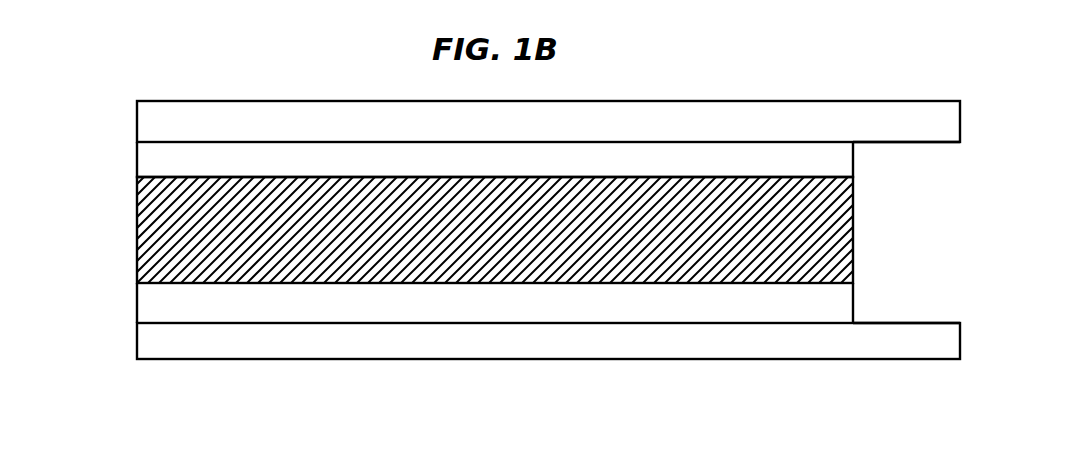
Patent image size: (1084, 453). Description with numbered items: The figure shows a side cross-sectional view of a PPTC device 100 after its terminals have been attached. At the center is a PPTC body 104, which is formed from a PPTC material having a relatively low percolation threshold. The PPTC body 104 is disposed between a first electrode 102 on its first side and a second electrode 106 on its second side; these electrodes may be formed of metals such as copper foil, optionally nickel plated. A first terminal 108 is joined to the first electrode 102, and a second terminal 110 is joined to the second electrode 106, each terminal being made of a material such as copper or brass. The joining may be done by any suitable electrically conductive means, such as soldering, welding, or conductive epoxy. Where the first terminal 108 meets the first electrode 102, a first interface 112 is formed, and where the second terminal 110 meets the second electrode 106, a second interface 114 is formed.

The PPTC device 100 is at (82, 90).
The first electrode 102 is at (147, 162).
The PPTC body 104 is at (137, 238).
The second electrode 106 is at (137, 310).
The first terminal 108 is at (137, 118).
The second terminal 110 is at (147, 358).
The first interface 112 is at (780, 133).
The second interface 114 is at (782, 333).